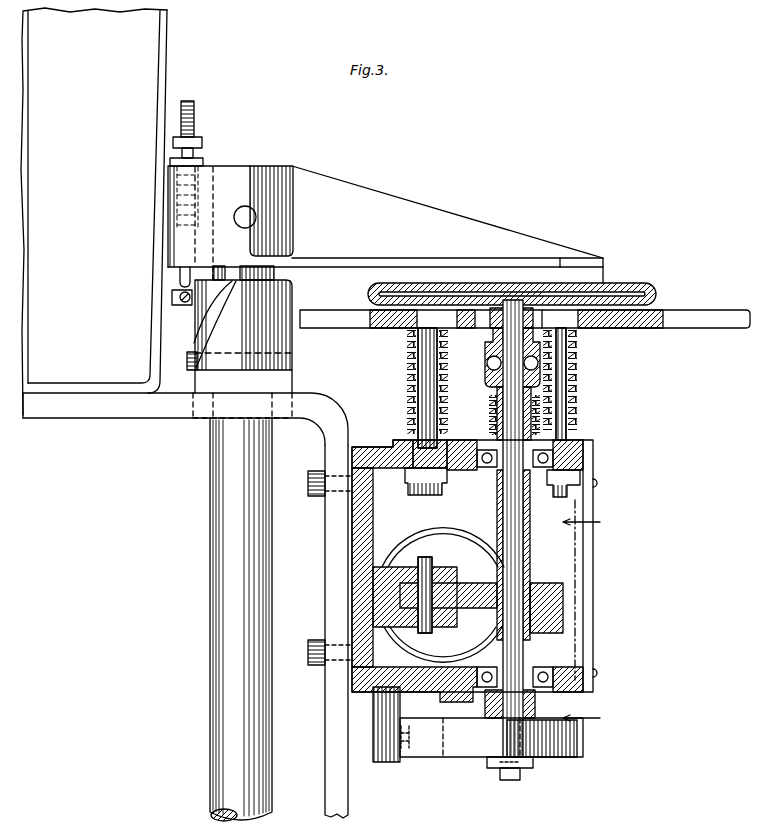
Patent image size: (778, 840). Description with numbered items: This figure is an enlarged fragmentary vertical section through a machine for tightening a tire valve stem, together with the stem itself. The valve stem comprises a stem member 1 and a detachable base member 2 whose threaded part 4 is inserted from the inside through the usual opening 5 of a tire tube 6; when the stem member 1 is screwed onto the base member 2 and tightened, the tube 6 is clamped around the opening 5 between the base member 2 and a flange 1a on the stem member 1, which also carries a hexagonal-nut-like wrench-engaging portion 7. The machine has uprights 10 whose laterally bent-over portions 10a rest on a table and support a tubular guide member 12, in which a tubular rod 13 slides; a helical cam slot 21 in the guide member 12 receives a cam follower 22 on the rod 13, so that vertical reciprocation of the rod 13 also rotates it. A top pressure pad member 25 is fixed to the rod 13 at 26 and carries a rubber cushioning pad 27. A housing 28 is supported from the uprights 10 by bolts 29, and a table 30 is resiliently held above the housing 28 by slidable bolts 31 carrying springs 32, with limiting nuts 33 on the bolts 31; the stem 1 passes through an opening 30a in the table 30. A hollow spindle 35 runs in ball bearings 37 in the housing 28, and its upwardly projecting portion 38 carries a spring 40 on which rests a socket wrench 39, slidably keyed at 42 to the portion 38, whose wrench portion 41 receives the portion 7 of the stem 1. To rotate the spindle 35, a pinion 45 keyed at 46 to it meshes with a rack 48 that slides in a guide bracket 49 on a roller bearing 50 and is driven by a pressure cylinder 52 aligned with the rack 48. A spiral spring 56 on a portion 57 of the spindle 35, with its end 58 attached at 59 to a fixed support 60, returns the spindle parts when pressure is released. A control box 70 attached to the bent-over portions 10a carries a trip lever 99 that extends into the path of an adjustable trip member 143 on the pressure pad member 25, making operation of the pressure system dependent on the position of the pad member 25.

The control box 70 is at (163, 58).
The bent-over portions 10a is at (86, 419).
The uprights 10 is at (327, 740).
The tubular rod 13 is at (212, 608).
The tubular guide member 12 is at (292, 356).
The helically-shaped cam slot 21 is at (202, 329).
The cam follower 22 is at (187, 362).
The top pressure pad member 25 is at (360, 194).
The fixing point 26 is at (245, 206).
The cushioning pad 27 is at (603, 276).
The adjustable trip member 143 is at (180, 273).
The trip lever 99 is at (172, 299).
The table or plate member 30 is at (721, 329).
The opening in table 30a is at (483, 299).
The detachable base member 2 is at (531, 309).
The tire tube 6 is at (653, 288).
The flange 1a is at (523, 283).
The wrench-engaging portion 7 is at (495, 296).
The opening of tire tube 5 is at (503, 309).
The threaded part 4 is at (553, 240).
The socket wrench 39 is at (488, 351).
The key 42 is at (490, 366).
The wrench portion 41 is at (490, 316).
The spring 40 is at (497, 402).
The spindle portion 38 is at (494, 395).
The hollow spindle 35 is at (530, 532).
The stem member 1 is at (510, 414).
The springs 32 is at (407, 354).
The slidable pins or bolts 31 is at (420, 381).
The frame or housing 28 is at (593, 572).
The limiting nuts 33 is at (447, 485).
The ball bearings 37 is at (485, 467).
The pressure cylinder 52 is at (432, 540).
The guide bracket 49 is at (383, 567).
The rack 48 is at (458, 587).
The roller bearing 50 is at (440, 618).
The pinion 45 is at (563, 598).
The key 46 is at (533, 597).
The bolts 29 is at (316, 497).
The spring end 58 is at (423, 751).
The spiral spring 56 is at (578, 743).
The fixed support 60 is at (378, 739).
The attachment point 59 is at (411, 722).
The spindle portion 57 is at (493, 740).